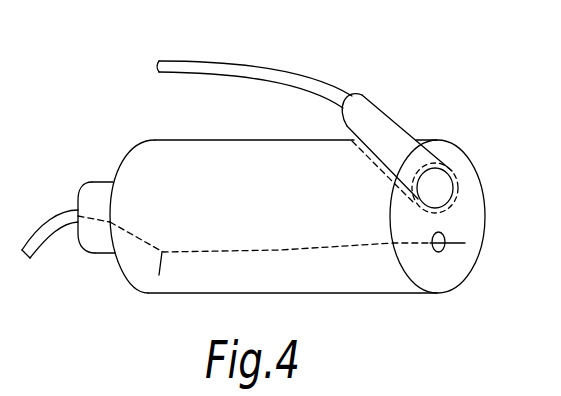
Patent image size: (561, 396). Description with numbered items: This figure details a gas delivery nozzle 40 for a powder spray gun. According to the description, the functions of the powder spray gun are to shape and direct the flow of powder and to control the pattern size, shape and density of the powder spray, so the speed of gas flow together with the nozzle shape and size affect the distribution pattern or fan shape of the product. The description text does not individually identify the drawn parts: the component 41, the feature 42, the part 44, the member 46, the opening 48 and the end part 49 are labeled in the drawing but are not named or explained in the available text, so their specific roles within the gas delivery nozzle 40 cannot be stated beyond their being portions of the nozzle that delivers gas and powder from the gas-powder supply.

The electronic device assembly 40 is at (306, 61).
The end plate 41 is at (485, 230).
The aperture 42 is at (453, 170).
The tubular member 44 is at (408, 142).
The strap 46 is at (176, 60).
The hole 48 is at (445, 250).
The end cap 49 is at (148, 288).